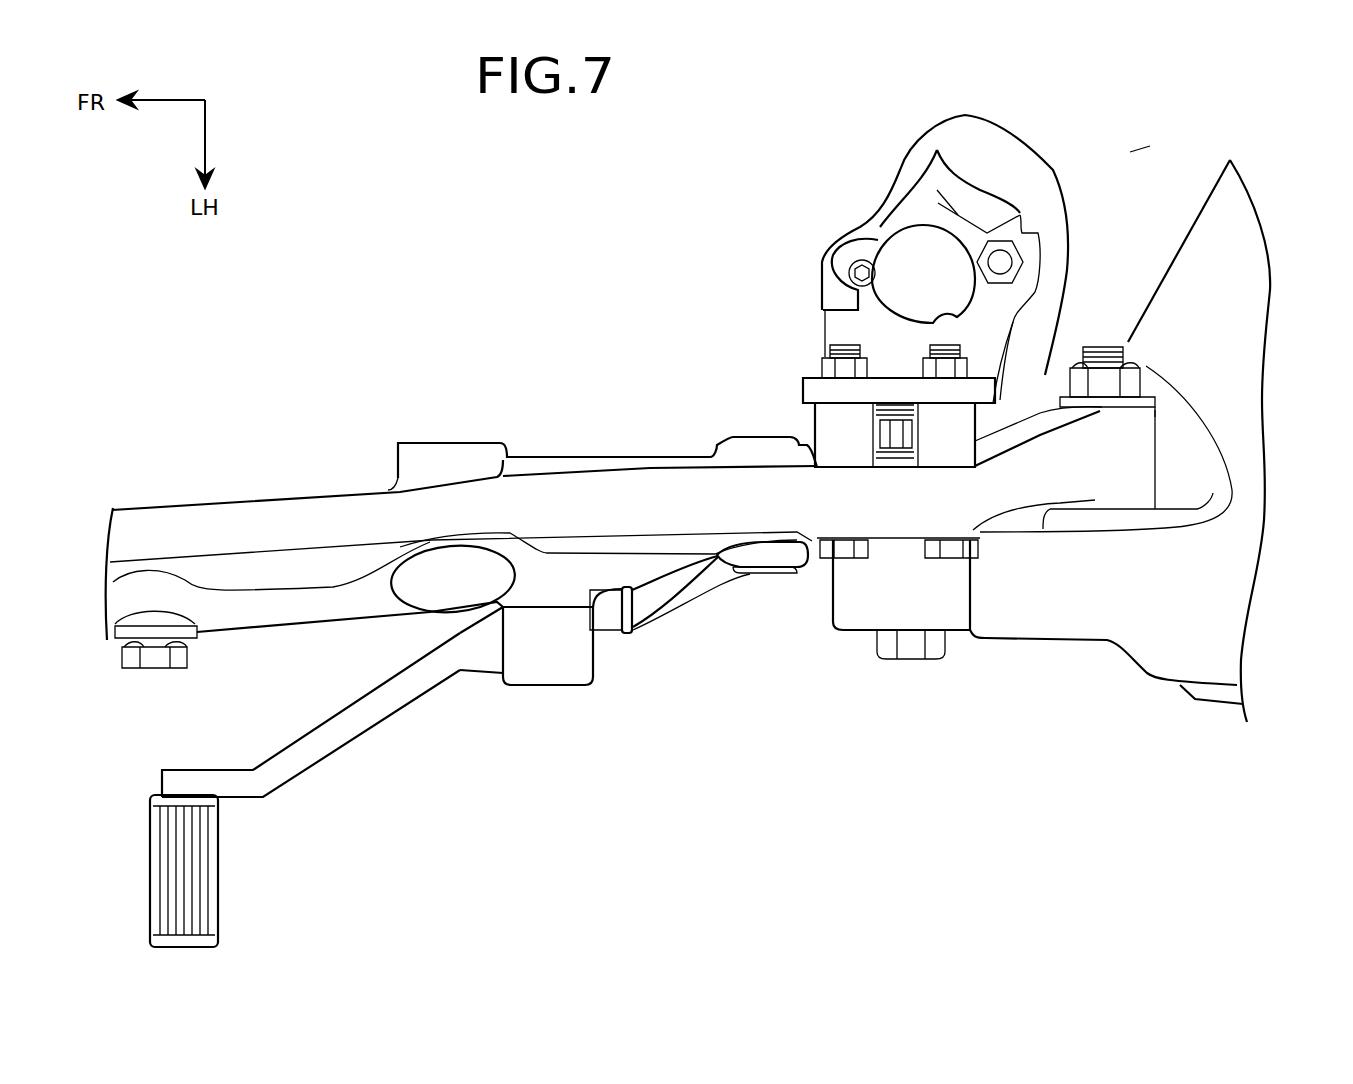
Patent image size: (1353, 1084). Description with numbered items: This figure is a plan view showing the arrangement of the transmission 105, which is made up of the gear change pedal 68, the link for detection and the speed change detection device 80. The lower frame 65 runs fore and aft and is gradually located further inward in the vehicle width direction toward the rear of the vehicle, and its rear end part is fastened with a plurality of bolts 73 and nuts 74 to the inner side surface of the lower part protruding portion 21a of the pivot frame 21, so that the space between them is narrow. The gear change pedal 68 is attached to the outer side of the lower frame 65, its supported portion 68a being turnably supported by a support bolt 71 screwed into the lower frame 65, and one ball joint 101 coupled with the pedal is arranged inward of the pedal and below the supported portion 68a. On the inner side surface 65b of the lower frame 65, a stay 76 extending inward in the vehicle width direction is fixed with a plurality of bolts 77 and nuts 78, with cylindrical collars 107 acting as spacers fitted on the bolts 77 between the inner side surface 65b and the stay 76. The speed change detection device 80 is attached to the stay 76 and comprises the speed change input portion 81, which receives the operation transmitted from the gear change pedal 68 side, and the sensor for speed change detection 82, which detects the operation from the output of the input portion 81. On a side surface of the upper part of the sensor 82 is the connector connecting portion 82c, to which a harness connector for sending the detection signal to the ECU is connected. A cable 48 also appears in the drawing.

The pivot frame 21 is at (1228, 332).
The lower part protruding portion 21a is at (1050, 633).
The cable 48 is at (693, 595).
The lower frame 65 is at (322, 490).
The inner side surface 65b is at (588, 472).
The gear change pedal 68 is at (372, 727).
The supported portion 68a is at (567, 663).
The support bolt 71 is at (533, 683).
The bolt 73 is at (910, 650).
The nut 74 is at (1132, 380).
The stay 76 is at (937, 190).
The bolt 77 is at (843, 543).
The nut 78 is at (923, 368).
The speed change detection device 80 is at (969, 235).
The speed change input portion 81 is at (1012, 147).
The sensor for speed change detection 82 is at (897, 257).
The connector connecting portion 82c is at (962, 222).
The ball joint 101 is at (607, 620).
The transmission 105 is at (1122, 157).
The cylindrical collar 107 is at (828, 428).